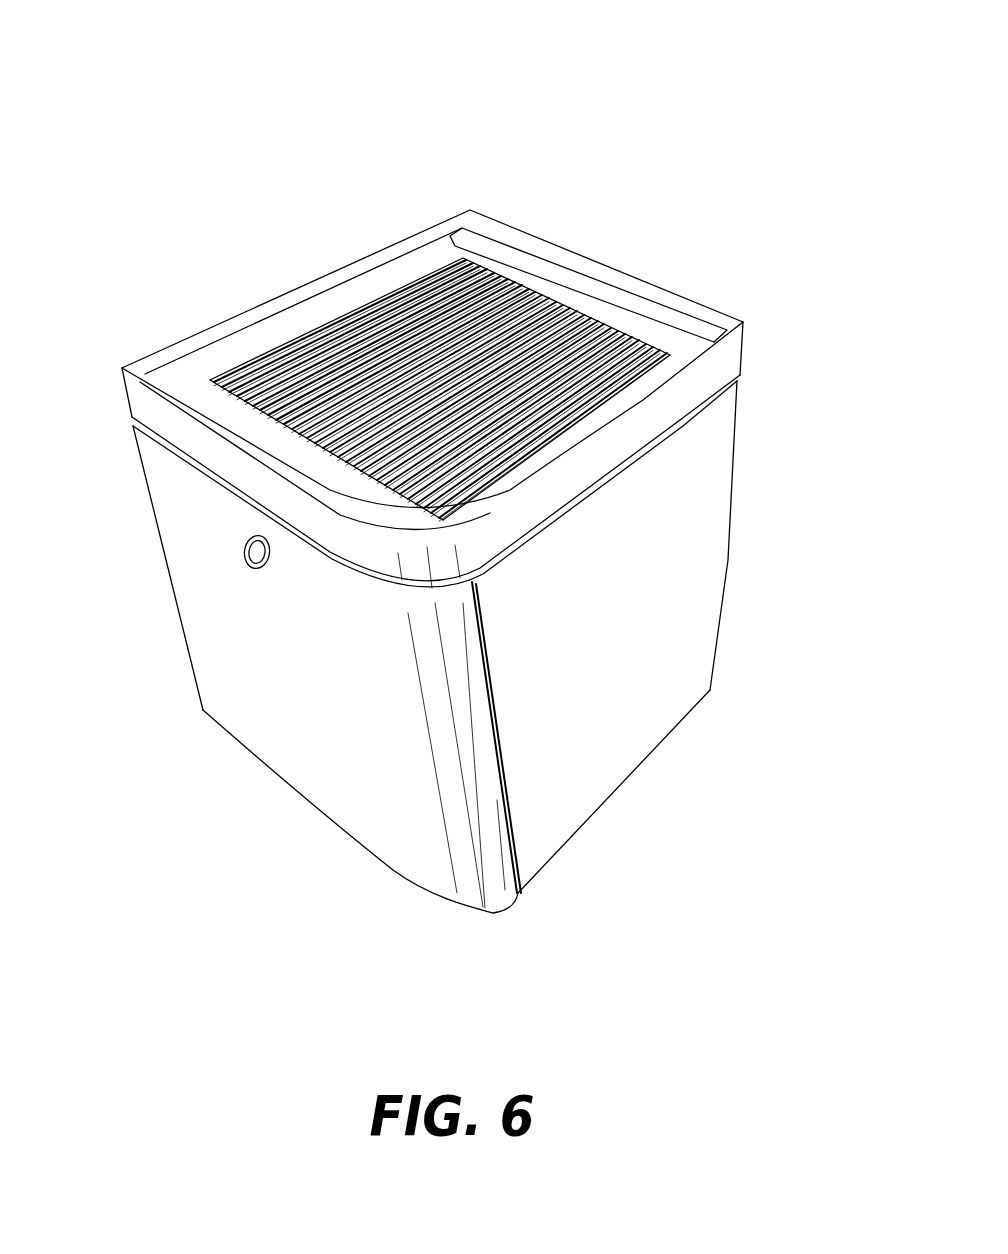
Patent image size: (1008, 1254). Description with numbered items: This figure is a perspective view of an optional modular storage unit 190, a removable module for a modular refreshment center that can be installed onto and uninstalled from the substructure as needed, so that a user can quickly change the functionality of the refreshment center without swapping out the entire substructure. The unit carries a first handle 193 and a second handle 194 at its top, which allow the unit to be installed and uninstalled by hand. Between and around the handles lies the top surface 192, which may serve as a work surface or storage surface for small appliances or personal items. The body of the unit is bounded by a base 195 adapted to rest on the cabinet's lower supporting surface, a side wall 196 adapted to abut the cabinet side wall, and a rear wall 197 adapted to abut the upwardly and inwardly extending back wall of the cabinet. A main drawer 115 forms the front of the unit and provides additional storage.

The modular storage unit 190 is at (262, 80).
The top surface 192 is at (405, 290).
The first handle 193 is at (198, 400).
The second handle 194 is at (631, 303).
The base 195 is at (318, 884).
The side wall 196 is at (220, 262).
The rear wall 197 is at (758, 462).
The main drawer 115 is at (205, 595).